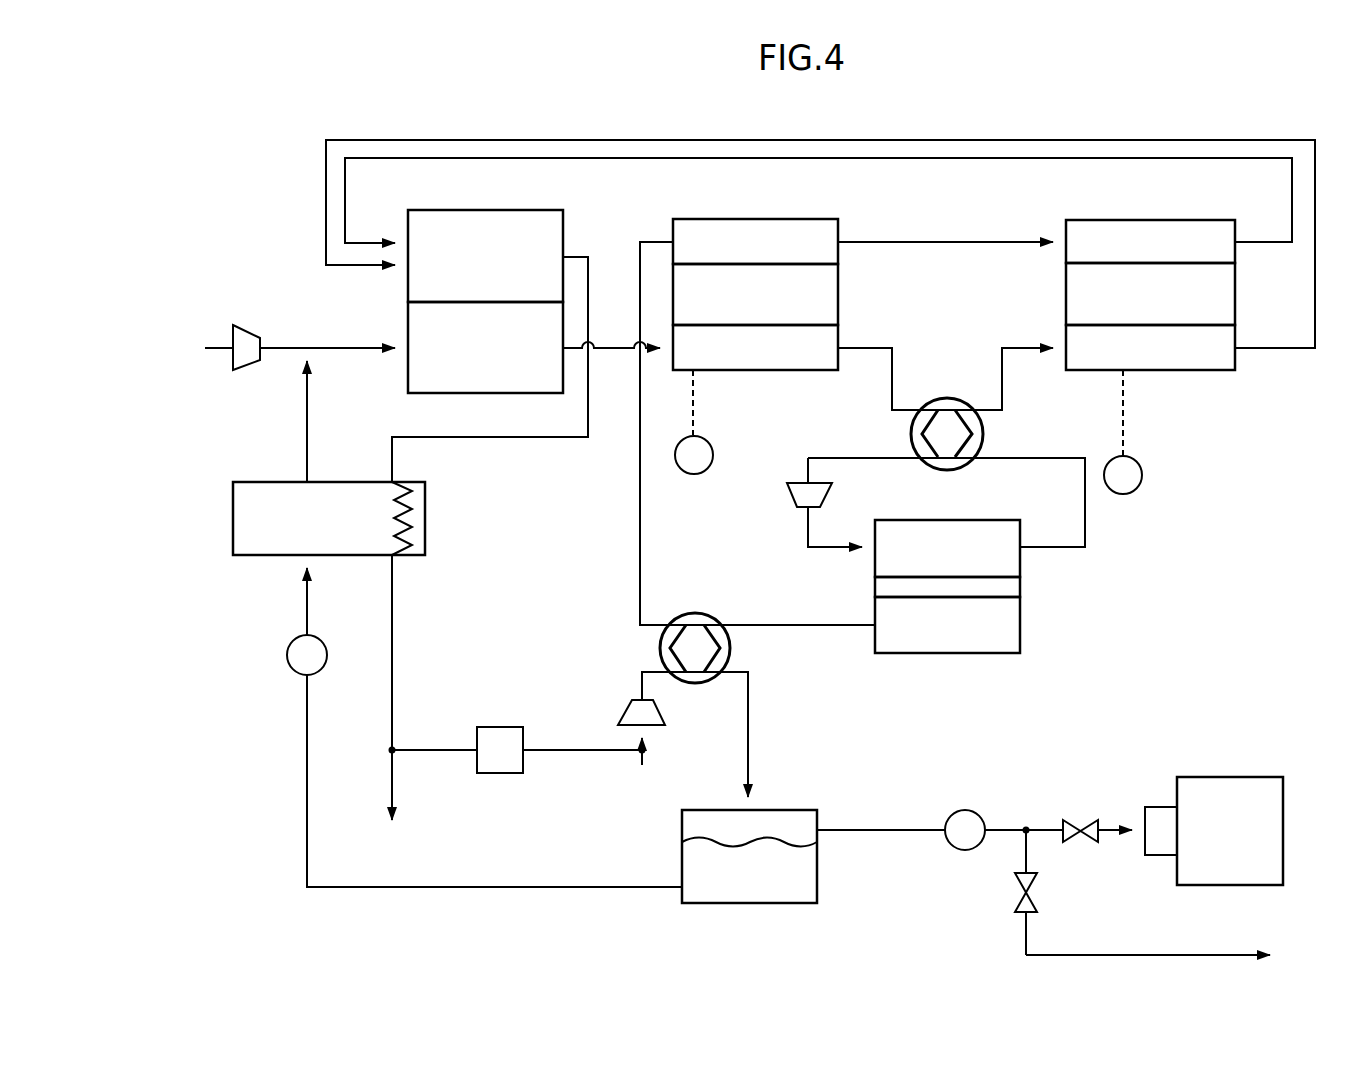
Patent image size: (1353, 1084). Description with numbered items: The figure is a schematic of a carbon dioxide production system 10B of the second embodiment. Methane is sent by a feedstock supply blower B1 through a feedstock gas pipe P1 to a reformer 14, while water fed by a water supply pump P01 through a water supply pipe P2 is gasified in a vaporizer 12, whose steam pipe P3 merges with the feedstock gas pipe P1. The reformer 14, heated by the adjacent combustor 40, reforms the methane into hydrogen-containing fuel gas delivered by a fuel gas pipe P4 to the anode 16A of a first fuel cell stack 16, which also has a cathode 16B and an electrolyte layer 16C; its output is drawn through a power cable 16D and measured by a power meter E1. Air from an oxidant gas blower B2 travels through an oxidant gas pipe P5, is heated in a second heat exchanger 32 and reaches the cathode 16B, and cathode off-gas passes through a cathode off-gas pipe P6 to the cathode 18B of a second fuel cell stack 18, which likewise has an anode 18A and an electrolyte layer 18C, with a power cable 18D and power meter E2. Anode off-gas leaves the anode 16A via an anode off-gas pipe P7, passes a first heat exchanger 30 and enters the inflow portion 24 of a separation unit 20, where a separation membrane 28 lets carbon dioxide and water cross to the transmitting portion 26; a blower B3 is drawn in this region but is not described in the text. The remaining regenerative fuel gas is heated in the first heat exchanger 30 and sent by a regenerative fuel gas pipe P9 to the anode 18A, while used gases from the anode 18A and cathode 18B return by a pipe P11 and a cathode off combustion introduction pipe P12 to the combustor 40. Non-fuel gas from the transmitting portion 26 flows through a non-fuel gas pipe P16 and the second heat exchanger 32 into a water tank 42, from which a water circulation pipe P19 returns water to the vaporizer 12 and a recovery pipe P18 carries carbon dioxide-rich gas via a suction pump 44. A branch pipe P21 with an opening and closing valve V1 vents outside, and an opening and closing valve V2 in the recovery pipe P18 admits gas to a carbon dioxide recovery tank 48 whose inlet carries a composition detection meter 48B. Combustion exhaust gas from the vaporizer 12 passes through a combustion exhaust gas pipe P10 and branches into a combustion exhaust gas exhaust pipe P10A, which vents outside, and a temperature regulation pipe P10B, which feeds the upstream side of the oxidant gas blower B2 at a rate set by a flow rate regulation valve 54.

The carbon dioxide production system 10B is at (1254, 116).
The vaporizer 12 is at (426, 518).
The reformer 14 is at (407, 324).
The first fuel cell stack 16 is at (791, 289).
The anode 16A is at (798, 371).
The cathode 16B is at (747, 218).
The electrolyte layer 16C is at (839, 310).
The power cable 16D is at (693, 413).
The second fuel cell stack 18 is at (1122, 291).
The anode 18A is at (1197, 371).
The cathode 18B is at (1108, 219).
The electrolyte layer 18C is at (1065, 311).
The power cable 18D is at (1124, 433).
The separation unit 20 is at (962, 587).
The inflow portion 24 is at (993, 520).
The transmitting portion 26 is at (950, 654).
The separation membrane 28 is at (874, 587).
The first heat exchanger 30 is at (983, 432).
The second heat exchanger 32 is at (660, 648).
The combustor 40 is at (407, 222).
The water tank 42 is at (681, 865).
The suction pump 44 is at (965, 851).
The carbon dioxide recovery tank 48 is at (1230, 886).
The composition detection meter 48B is at (1160, 856).
The flow rate regulation valve 54 is at (504, 726).
The feedstock supply blower B1 is at (246, 325).
The oxidant gas blower B2 is at (617, 714).
The blower B3 is at (786, 495).
The power meter E1 is at (713, 455).
The power meter E2 is at (1143, 475).
The water supply pump P01 is at (287, 655).
The feedstock gas pipe P1 is at (289, 347).
The water supply pipe P2 is at (306, 604).
The steam pipe P3 is at (306, 424).
The fuel gas pipe P4 is at (613, 350).
The oxidant gas pipe P5 is at (640, 519).
The cathode off-gas pipe P6 is at (945, 241).
The anode off-gas pipe P7 is at (891, 391).
The regenerative fuel gas pipe P9 is at (1003, 386).
The combustion exhaust gas pipe P10 is at (533, 438).
The combustion exhaust gas exhaust pipe P10A is at (393, 800).
The temperature regulation pipe P10B is at (437, 749).
The pipe P11 is at (1272, 350).
The cathode off combustion introduction pipe P12 is at (1270, 244).
The non-fuel gas pipe P16 is at (800, 626).
The recovery pipe P18 is at (893, 829).
The water circulation pipe P19 is at (483, 888).
The branch pipe P21 is at (1026, 940).
The opening and closing valve V1 is at (1037, 900).
The opening and closing valve V2 is at (1076, 820).